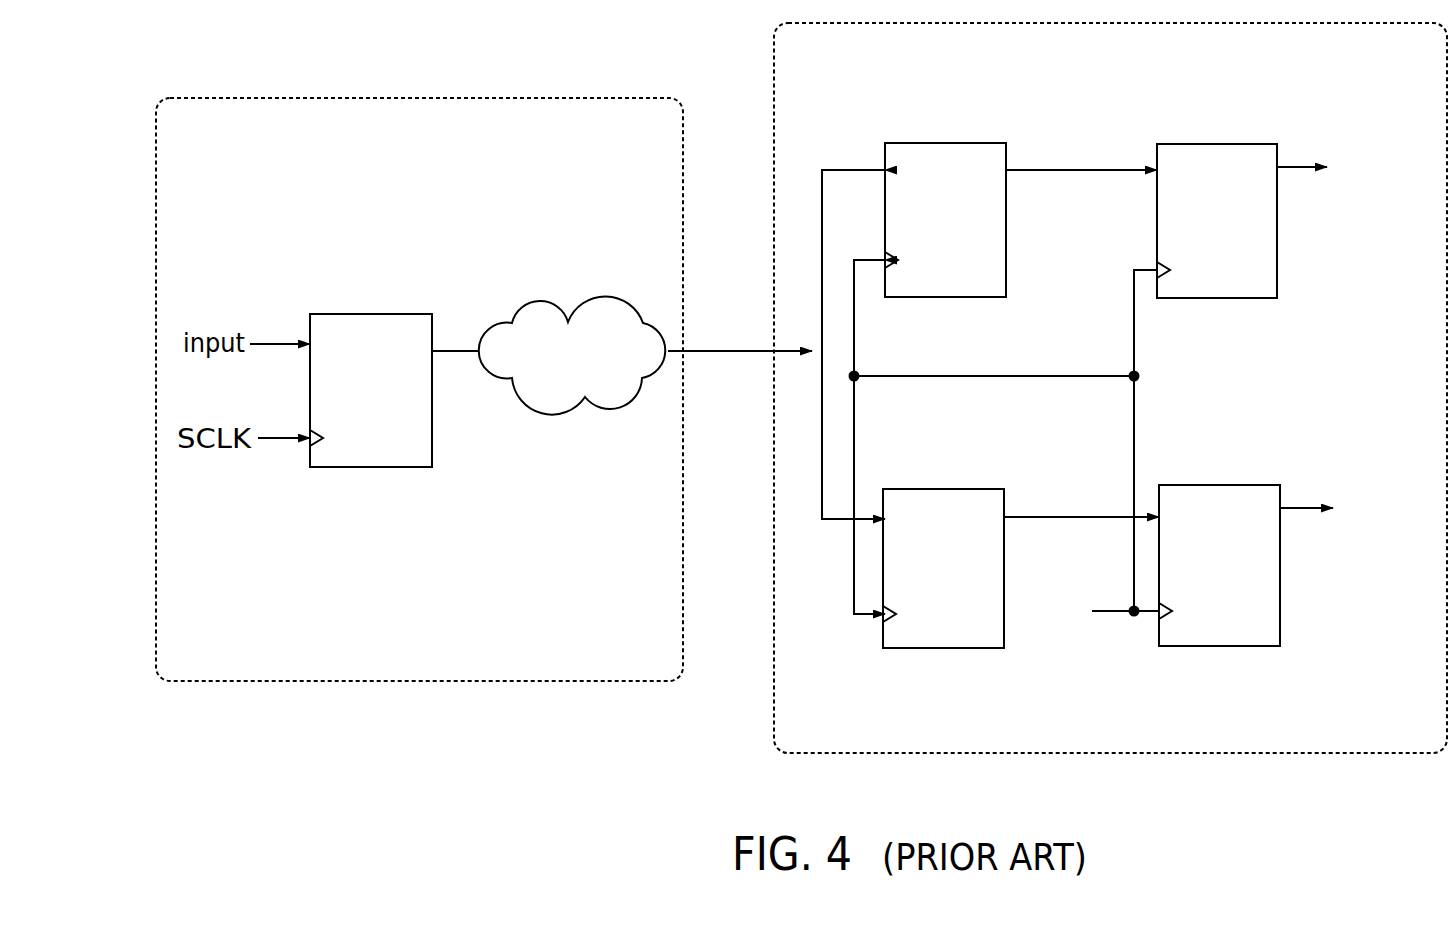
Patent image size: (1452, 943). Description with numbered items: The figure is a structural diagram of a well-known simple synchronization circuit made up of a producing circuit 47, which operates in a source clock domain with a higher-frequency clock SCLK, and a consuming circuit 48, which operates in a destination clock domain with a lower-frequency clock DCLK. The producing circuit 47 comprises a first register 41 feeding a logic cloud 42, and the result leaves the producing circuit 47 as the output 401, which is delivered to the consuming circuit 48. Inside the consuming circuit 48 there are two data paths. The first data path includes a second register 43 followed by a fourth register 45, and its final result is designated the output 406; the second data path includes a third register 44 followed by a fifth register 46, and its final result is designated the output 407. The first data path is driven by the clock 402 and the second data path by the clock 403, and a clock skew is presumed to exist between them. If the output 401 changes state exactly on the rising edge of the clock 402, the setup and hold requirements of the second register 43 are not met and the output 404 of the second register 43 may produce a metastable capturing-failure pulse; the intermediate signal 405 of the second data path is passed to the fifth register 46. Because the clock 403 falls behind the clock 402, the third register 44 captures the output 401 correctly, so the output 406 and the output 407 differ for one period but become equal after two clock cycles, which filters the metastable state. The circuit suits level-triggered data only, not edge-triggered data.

The first register 41 is at (411, 312).
The logic cloud 42 is at (608, 289).
The second register 43 is at (962, 141).
The third register 44 is at (948, 487).
The fourth register 45 is at (1255, 142).
The fifth register 46 is at (1253, 483).
The producing circuit 47 is at (222, 684).
The consuming circuit 48 is at (771, 729).
The output of the producing circuit 401 is at (705, 350).
The clock of the first data path 402 is at (858, 321).
The clock of the second data path 403 is at (857, 620).
The output of the second register 404 is at (1054, 167).
The intermediate signal line 405 is at (1033, 515).
The output of the first data path 406 is at (1329, 169).
The output of the second data path 407 is at (1332, 508).